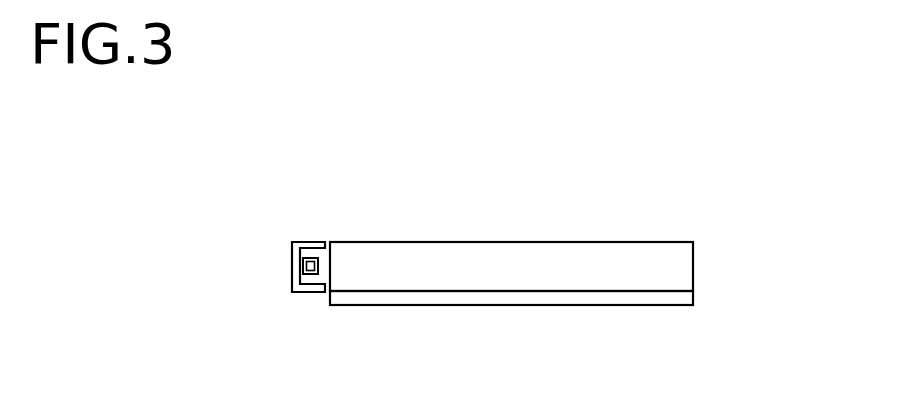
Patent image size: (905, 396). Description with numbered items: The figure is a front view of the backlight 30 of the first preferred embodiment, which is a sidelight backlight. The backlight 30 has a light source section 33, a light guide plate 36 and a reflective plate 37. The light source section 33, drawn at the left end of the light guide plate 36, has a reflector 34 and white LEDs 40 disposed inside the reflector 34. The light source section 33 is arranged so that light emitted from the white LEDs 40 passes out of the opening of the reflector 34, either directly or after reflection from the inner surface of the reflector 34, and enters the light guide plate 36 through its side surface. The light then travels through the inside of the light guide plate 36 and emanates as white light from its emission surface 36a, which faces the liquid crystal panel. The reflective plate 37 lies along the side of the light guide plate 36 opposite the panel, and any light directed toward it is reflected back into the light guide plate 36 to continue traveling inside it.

The backlight 30 is at (688, 207).
The light source section 33 is at (314, 241).
The reflector 34 is at (290, 280).
The light guide plate 36 is at (693, 265).
The emission surface 36a is at (478, 241).
The reflective plate 37 is at (693, 298).
The white LEDs 40 is at (303, 266).